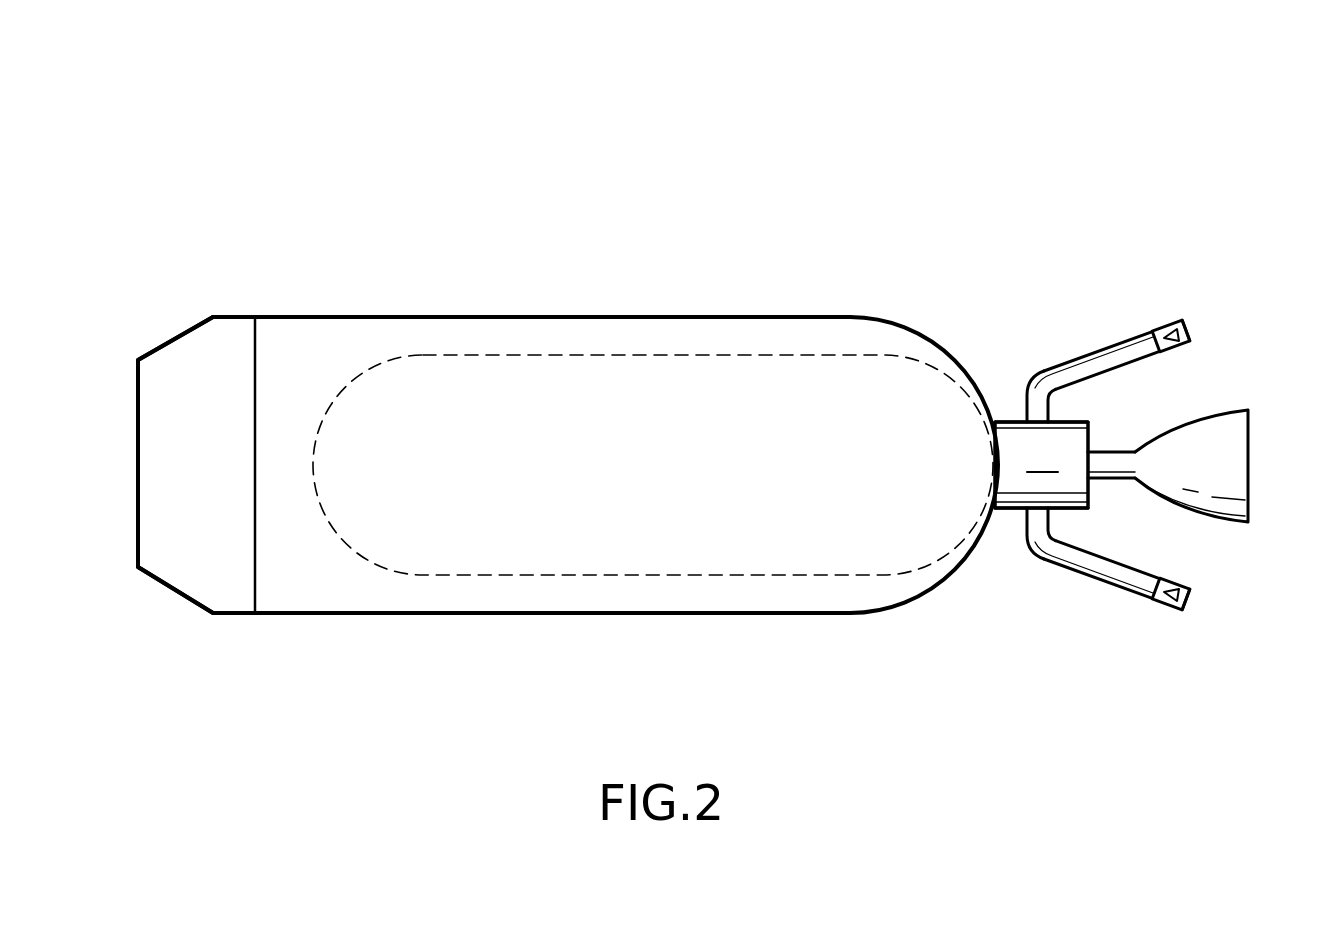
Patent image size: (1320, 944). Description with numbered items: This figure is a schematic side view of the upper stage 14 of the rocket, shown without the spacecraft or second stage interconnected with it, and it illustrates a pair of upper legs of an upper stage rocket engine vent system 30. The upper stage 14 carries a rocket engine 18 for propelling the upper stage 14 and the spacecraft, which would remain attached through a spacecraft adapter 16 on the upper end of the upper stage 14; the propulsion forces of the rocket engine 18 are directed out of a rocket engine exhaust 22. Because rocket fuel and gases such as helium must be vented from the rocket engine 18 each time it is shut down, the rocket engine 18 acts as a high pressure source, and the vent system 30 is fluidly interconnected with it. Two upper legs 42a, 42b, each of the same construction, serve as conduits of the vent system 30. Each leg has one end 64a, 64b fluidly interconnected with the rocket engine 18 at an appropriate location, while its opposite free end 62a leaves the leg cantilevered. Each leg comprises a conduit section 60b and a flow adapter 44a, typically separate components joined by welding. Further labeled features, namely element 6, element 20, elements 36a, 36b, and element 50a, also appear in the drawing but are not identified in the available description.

The propellant tank 6 is at (403, 332).
The upper stage 14 is at (308, 317).
The spacecraft adapter 16 is at (177, 337).
The rocket engine 18 is at (997, 510).
The propellant 20 is at (570, 353).
The rocket engine exhaust 22 is at (1242, 410).
The upper stage rocket engine vent system 30 is at (1165, 174).
The first feed pipe 36a is at (1029, 382).
The second feed pipe 36b is at (1028, 548).
The upper leg 42a is at (1102, 343).
The upper leg 42b is at (1075, 575).
The flow adapter 44a is at (1195, 342).
The nozzle head 50a is at (1172, 320).
The conduit section 60b is at (1148, 357).
The free end of upper leg 62a is at (1190, 325).
The end of upper leg 64a is at (1060, 418).
The end of upper leg 64b is at (1055, 508).